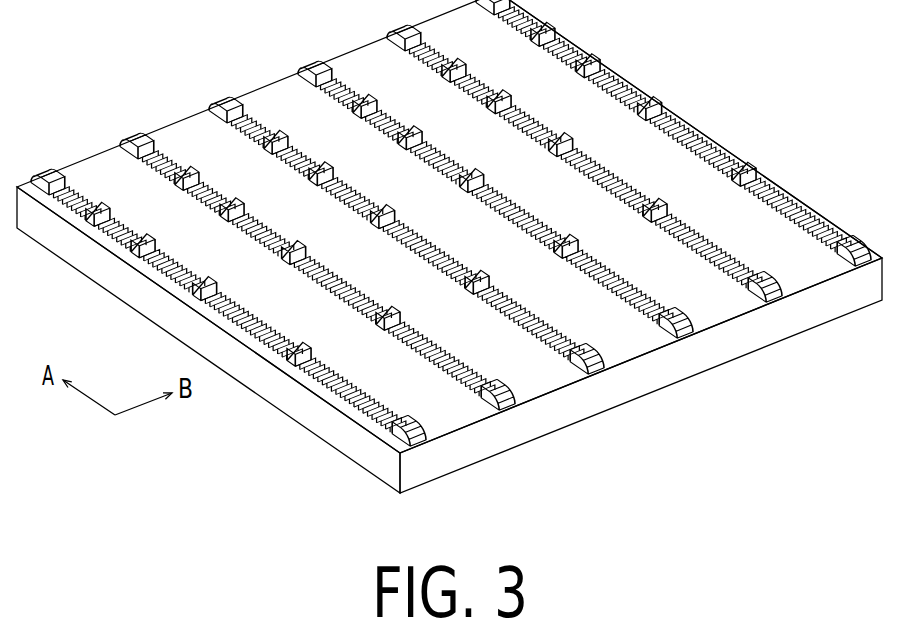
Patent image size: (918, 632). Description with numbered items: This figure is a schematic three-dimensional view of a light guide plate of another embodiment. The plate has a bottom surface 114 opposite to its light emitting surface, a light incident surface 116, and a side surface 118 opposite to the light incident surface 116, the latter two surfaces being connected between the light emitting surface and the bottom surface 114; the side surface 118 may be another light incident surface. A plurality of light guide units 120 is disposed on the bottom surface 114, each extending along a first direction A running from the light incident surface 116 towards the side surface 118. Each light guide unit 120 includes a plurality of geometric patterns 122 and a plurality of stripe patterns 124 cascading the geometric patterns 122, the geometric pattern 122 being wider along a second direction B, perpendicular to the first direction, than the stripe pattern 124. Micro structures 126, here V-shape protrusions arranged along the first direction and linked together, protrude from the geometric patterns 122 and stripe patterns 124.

The bottom surface 114 is at (449, 246).
The light incident surface 116 is at (748, 336).
The side surface 118 is at (270, 78).
The light guide unit 120 is at (454, 223).
The geometric pattern 122 is at (497, 90).
The stripe pattern 124 is at (473, 80).
The micro structure 126 is at (707, 139).